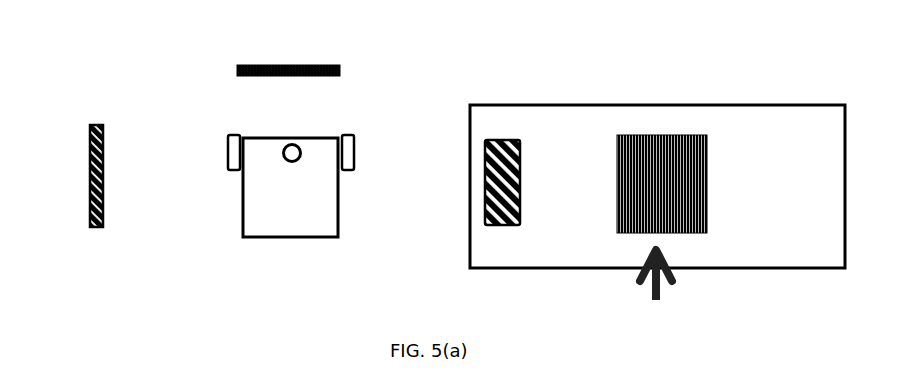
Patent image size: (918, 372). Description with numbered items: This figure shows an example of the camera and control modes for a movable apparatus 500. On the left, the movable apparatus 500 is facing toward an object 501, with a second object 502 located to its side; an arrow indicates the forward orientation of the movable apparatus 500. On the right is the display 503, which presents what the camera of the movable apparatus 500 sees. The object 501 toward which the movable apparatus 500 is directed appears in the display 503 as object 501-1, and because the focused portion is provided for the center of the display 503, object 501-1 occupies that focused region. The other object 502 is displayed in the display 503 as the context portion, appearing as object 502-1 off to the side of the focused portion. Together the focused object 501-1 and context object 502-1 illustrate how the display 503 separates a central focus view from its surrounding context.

The movable apparatus 500 is at (307, 216).
The object 501 is at (337, 63).
The object 502 is at (97, 123).
The display 503 is at (816, 143).
The object 501-1 is at (710, 143).
The object 502-1 is at (520, 142).